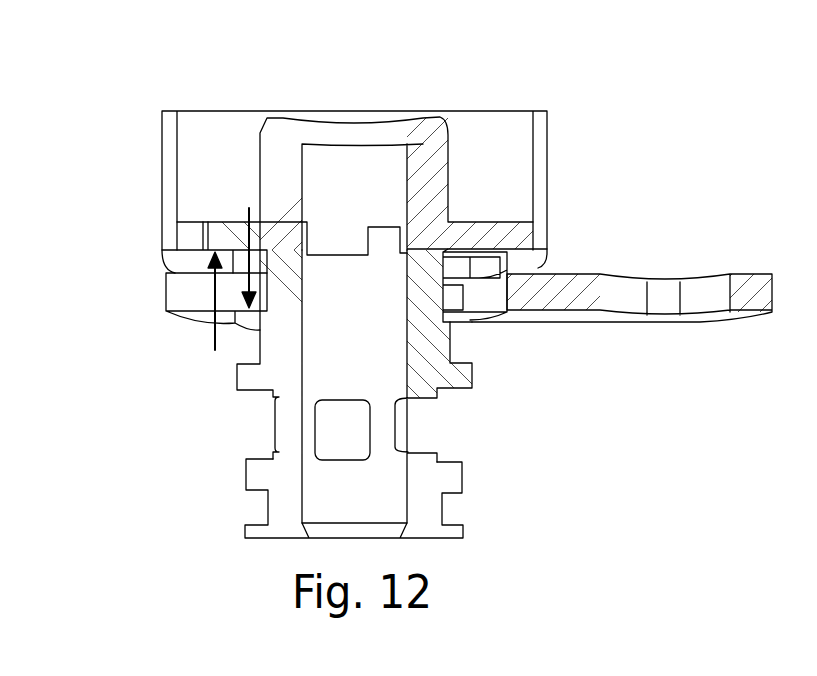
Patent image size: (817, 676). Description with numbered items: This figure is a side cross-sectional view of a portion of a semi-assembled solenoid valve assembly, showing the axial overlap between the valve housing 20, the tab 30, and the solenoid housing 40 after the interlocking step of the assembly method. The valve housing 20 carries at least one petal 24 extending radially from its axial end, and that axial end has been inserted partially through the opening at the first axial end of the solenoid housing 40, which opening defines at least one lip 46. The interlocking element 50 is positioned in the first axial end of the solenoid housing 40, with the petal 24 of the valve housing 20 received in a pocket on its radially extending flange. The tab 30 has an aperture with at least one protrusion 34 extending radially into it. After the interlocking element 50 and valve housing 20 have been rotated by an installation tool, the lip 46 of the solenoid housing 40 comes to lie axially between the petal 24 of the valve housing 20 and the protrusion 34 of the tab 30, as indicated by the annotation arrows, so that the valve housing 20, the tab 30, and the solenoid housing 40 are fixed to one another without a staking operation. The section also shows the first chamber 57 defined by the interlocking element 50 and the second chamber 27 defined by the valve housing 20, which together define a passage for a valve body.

The valve housing 20 is at (472, 477).
The petal 24 is at (230, 232).
The second chamber 27 is at (367, 342).
The tab 30 is at (586, 268).
The protrusion 34 is at (229, 300).
The solenoid housing 40 is at (552, 139).
The lip 46 is at (193, 262).
The interlocking element 50 is at (436, 154).
The first chamber 57 is at (338, 172).